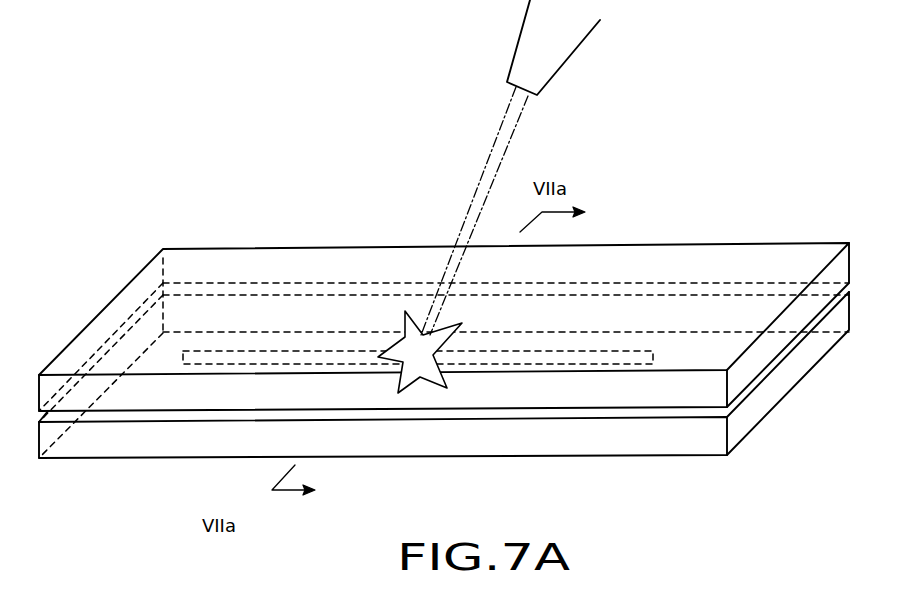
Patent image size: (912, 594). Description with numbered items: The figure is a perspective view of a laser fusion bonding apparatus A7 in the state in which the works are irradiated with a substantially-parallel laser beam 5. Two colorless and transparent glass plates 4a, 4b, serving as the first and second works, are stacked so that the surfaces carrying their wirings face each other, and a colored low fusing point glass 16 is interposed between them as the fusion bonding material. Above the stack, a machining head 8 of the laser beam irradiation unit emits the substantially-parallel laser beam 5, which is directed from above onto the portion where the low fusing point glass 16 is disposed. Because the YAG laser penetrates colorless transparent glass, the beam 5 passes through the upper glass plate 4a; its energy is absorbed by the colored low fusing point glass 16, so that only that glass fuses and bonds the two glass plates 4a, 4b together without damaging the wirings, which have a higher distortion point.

The laser fusion bonding apparatus A7 is at (389, 84).
The machining head 8 is at (567, 60).
The substantially-parallel laser beam 5 is at (512, 131).
The low fusing point glass 16 is at (575, 349).
The glass plate 4a is at (700, 262).
The glass plate 4b is at (842, 318).